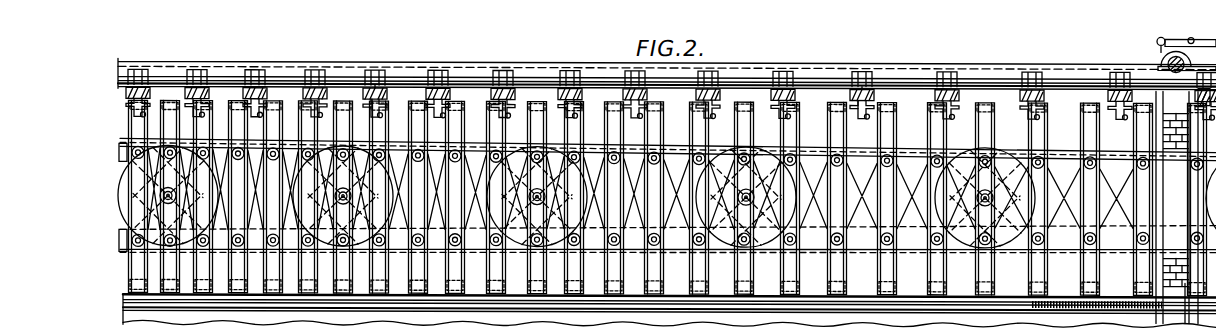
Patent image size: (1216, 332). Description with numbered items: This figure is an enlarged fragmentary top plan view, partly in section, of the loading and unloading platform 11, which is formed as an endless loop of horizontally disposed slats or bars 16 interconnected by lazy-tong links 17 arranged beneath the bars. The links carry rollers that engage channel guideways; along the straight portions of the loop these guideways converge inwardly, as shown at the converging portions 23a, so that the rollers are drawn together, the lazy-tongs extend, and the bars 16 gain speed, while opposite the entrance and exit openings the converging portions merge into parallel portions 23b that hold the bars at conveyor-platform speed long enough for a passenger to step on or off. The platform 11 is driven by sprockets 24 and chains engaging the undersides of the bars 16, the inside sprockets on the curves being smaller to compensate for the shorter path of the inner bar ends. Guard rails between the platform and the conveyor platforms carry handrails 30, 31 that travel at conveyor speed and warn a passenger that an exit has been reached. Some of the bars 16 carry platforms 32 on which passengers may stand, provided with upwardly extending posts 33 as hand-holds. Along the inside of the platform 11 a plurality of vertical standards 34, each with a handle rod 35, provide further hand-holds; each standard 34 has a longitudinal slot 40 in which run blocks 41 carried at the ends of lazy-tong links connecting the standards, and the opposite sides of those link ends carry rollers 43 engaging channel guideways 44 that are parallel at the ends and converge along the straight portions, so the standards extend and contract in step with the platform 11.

The loading and unloading platform 11 is at (667, 232).
The slats or bars 16 is at (612, 118).
The lazy-tong links 17 is at (865, 175).
The converging portions of the guideways 23a is at (815, 156).
The parallel portions of the guideways 23b is at (1183, 163).
The sprockets 24 is at (1163, 115).
The handrail 30 is at (627, 311).
The handrail 31 is at (823, 301).
The platforms 32 is at (318, 152).
The posts 33 is at (177, 196).
The vertical standards 34 is at (403, 66).
The handle rod 35 is at (210, 114).
The longitudinal slot 40 is at (376, 90).
The blocks 41 is at (372, 80).
The rollers 43 is at (250, 74).
The channel guideways 44 is at (174, 68).